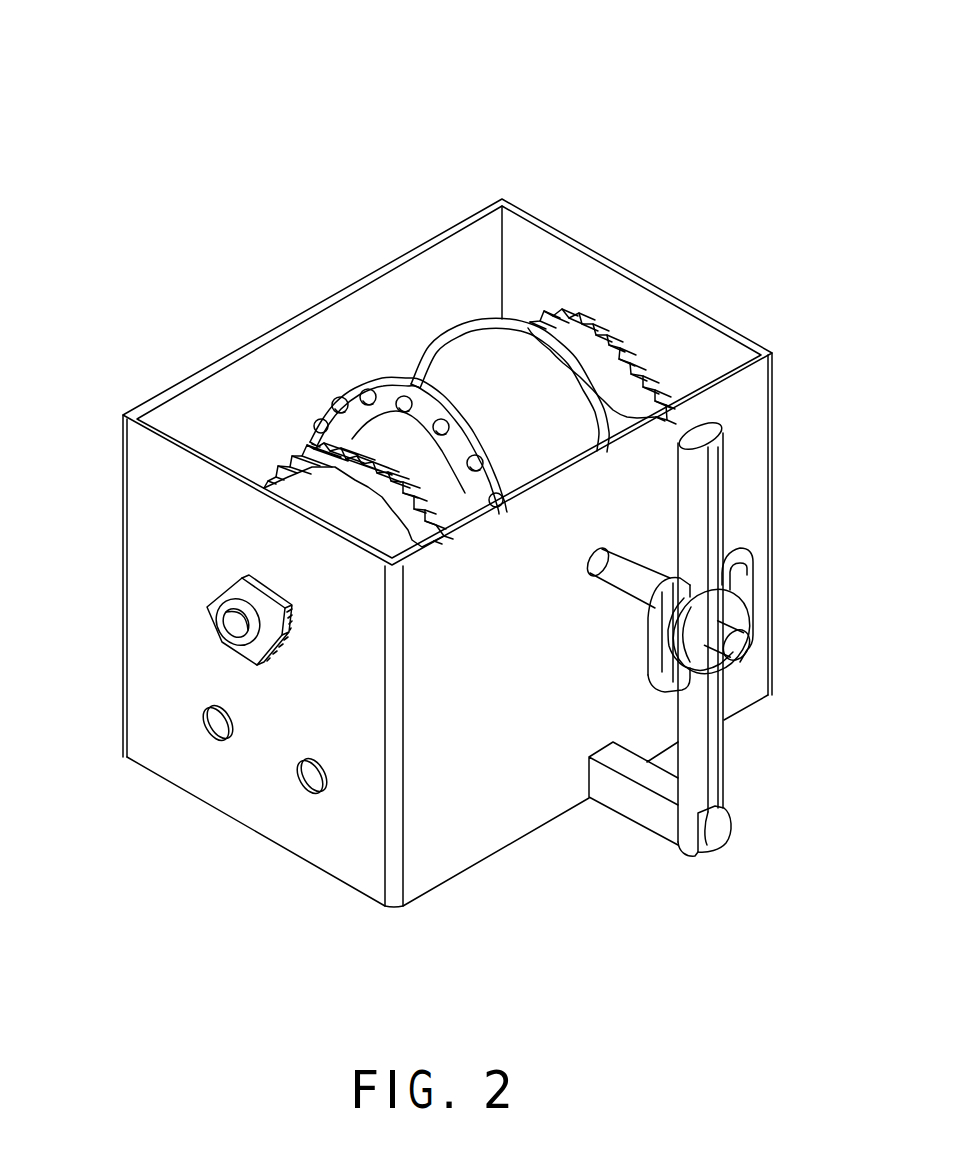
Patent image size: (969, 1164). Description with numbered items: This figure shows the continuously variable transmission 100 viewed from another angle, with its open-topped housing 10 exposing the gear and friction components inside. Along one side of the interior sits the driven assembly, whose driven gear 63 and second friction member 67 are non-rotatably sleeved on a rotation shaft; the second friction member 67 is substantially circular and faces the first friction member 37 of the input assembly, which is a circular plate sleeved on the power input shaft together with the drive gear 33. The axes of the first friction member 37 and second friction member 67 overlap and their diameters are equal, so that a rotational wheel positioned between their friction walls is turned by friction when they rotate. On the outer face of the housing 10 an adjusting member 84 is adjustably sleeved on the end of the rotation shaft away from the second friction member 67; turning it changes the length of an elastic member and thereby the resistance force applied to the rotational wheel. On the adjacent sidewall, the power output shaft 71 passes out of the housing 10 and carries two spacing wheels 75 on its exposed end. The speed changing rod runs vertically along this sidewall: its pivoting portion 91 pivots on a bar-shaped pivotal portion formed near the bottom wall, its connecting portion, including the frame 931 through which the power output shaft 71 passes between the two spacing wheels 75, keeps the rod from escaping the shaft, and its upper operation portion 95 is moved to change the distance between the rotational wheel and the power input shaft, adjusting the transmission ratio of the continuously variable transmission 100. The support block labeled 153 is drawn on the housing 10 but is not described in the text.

The continuously variable transmission 100 is at (468, 43).
The housing 10 is at (324, 835).
The adjusting member 84 is at (220, 598).
The driven gear 63 is at (288, 460).
The second friction member 67 is at (355, 388).
The first friction member 37 is at (481, 319).
The drive gear 33 is at (592, 318).
The operation portion 95 is at (713, 500).
The pivoting portion 91 is at (713, 750).
The support block 153 is at (640, 812).
The frame 931 is at (745, 565).
The spacing wheels 75 is at (732, 610).
The power output shaft 71 is at (740, 643).